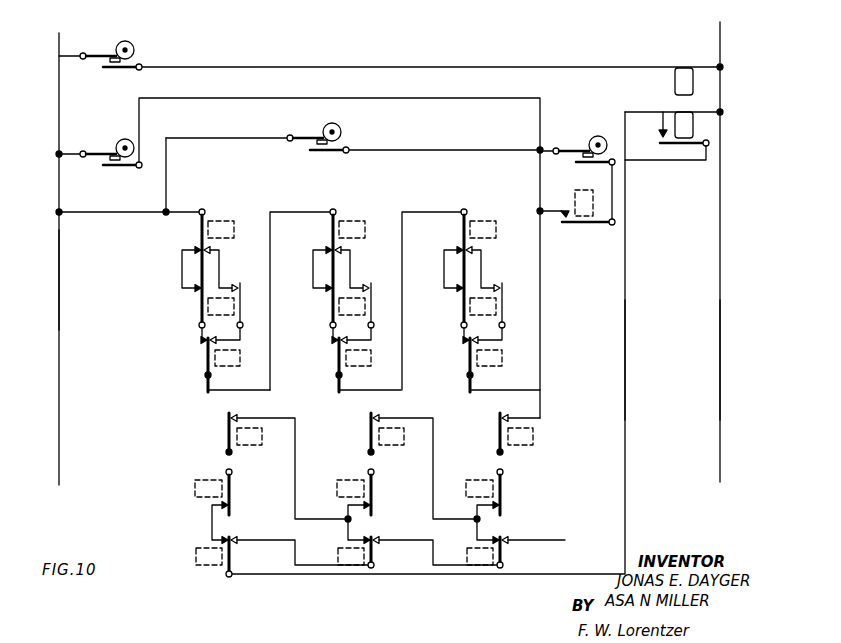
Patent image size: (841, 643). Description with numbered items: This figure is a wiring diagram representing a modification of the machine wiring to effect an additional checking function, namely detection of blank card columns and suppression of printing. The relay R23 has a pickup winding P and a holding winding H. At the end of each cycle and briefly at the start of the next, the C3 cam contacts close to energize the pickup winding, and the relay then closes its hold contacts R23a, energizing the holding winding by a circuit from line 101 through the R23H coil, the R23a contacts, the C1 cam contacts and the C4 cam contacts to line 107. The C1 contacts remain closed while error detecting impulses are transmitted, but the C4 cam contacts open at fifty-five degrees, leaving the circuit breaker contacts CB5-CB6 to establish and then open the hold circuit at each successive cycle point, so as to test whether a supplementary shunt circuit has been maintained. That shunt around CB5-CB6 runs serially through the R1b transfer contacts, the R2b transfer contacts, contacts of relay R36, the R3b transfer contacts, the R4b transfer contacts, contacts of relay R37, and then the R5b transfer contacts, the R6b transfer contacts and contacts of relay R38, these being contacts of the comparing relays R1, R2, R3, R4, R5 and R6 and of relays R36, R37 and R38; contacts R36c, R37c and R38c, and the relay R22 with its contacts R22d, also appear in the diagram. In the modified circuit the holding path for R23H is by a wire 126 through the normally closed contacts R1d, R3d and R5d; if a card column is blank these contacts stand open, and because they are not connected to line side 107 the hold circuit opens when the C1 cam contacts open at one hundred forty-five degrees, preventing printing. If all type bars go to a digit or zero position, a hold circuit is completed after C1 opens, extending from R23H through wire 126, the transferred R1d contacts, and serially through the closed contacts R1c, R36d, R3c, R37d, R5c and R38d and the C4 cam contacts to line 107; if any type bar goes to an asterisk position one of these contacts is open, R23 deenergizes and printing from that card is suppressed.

The transfer contacts R1b is at (194, 256).
The transfer contacts R2b is at (197, 287).
The comparing relay R1 is at (232, 219).
The comparing relay R2 is at (206, 308).
The relay contacts R36c is at (199, 339).
The relay R36 is at (226, 367).
The transfer contacts R3b is at (325, 256).
The transfer contacts R4b is at (328, 287).
The comparing relay R3 is at (363, 219).
The comparing relay R4 is at (337, 308).
The relay contacts R37c is at (330, 339).
The relay R37 is at (357, 367).
The transfer contacts R5b is at (456, 256).
The transfer contacts R6b is at (459, 287).
The comparing relay R5 is at (494, 219).
The comparing relay R6 is at (468, 308).
The relay contacts R38c is at (461, 339).
The relay R38 is at (488, 367).
The relay contacts R36d is at (233, 418).
The relay contacts R1c is at (232, 516).
The normally closed relay contacts R1d is at (235, 542).
The relay contacts R37d is at (375, 418).
The relay contacts R3c is at (374, 516).
The normally closed relay contacts R3d is at (377, 542).
The relay contacts R38d is at (506, 417).
The relay contacts R5c is at (503, 516).
The normally closed relay contacts R5d is at (506, 542).
The cam contacts C3 is at (92, 48).
The cam contacts C4 is at (92, 146).
The circuit breaker contacts CB5-CB6 is at (296, 130).
The cam contacts C1 is at (566, 146).
The relay R22 is at (590, 203).
The relay contacts R22d is at (565, 224).
The relay R23 is at (675, 111).
The hold contacts R23a is at (655, 146).
The wire 126 is at (628, 360).
The line 101 is at (721, 392).
The line 107 is at (59, 270).